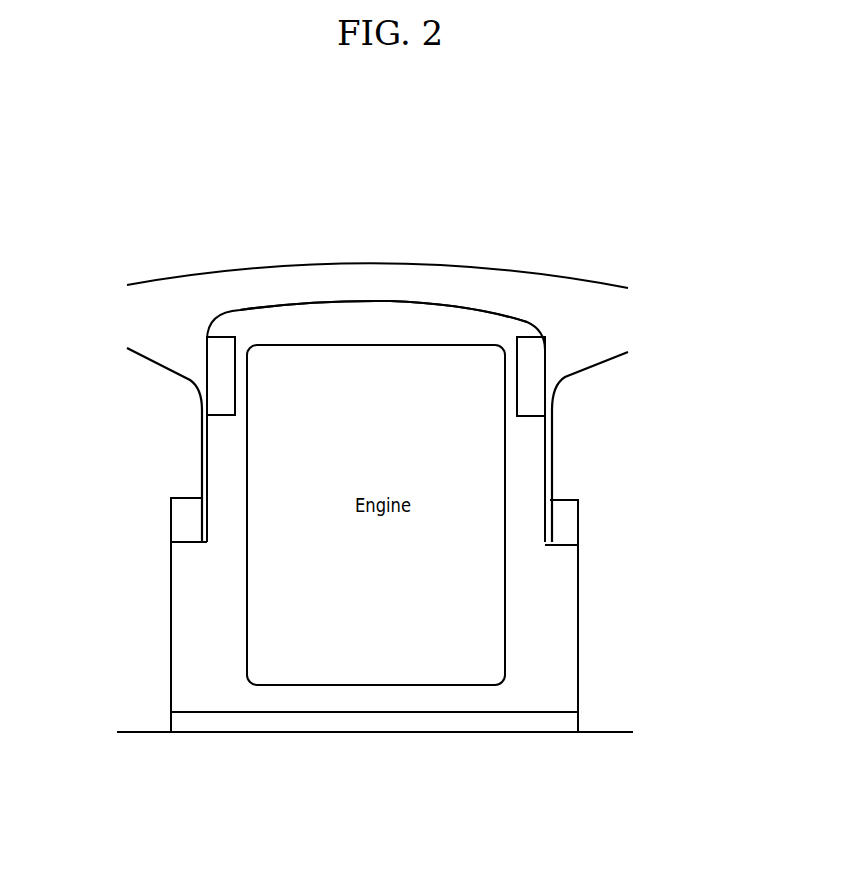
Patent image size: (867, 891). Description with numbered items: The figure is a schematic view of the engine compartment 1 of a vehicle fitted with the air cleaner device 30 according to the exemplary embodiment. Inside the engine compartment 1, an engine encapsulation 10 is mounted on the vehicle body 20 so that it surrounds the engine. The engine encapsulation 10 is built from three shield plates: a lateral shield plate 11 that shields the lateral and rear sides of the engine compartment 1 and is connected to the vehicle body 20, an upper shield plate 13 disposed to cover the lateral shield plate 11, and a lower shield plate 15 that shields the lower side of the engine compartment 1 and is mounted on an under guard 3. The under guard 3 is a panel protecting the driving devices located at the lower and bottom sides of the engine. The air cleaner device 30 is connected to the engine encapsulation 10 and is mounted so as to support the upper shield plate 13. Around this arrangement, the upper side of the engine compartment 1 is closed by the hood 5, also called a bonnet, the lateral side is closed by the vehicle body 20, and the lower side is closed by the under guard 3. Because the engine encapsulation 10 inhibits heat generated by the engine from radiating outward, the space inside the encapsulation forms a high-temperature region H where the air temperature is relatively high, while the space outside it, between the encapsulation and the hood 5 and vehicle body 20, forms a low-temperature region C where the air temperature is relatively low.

The engine compartment 1 is at (558, 614).
The under guard 3 is at (607, 734).
The hood 5 is at (209, 268).
The engine encapsulation 10 is at (298, 302).
The lateral shield plate 11 is at (548, 364).
The upper shield plate 13 is at (382, 302).
The lower shield plate 15 is at (220, 713).
The vehicle body 20 is at (551, 455).
The air cleaner device 30 is at (221, 398).
The low-temperature region C is at (141, 323).
The high-temperature region H is at (219, 470).